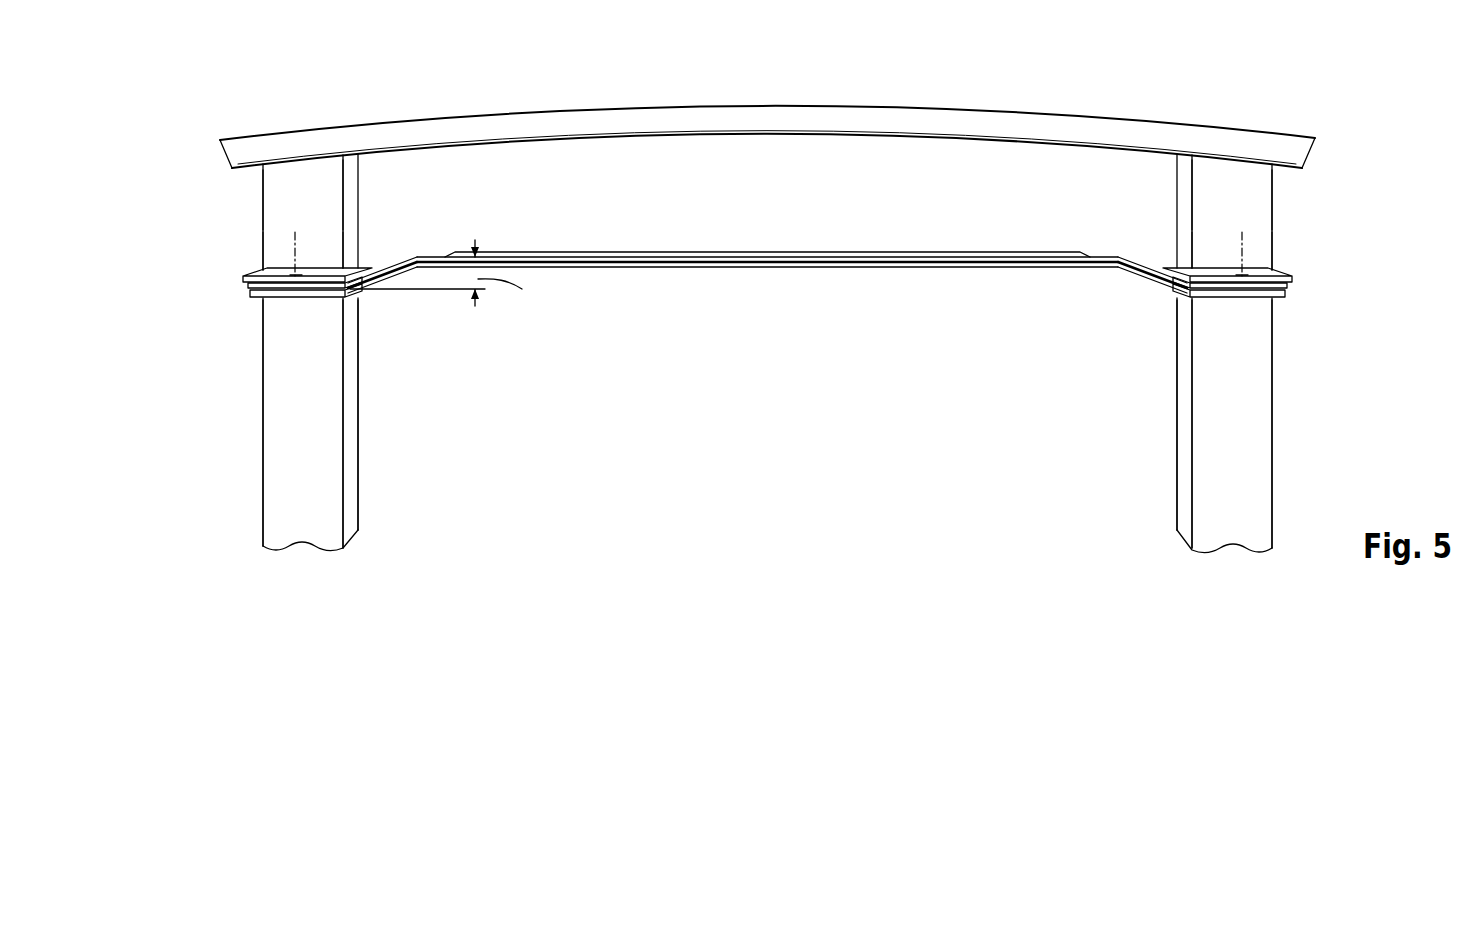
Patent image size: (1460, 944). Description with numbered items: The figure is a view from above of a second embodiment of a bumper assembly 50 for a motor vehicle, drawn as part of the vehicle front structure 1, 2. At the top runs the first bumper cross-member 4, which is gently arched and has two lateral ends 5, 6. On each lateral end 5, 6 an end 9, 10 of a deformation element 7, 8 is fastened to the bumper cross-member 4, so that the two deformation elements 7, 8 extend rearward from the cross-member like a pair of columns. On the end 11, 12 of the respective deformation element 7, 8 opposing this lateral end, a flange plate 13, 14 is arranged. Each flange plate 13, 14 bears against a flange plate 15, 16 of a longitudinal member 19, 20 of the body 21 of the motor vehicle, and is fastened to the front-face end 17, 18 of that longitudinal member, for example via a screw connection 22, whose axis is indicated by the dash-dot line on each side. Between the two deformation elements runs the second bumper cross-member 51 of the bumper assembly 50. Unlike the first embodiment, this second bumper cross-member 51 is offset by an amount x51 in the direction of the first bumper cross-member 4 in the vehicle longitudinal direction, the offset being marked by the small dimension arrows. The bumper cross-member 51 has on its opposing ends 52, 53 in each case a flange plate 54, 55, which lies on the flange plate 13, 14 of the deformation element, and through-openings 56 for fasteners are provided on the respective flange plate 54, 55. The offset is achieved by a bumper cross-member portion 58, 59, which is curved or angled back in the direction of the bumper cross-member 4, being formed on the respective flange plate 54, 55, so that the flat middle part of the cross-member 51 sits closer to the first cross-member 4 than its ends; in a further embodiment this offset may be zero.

The body structure 1 is at (772, 98).
The roof structure 2 is at (772, 98).
The bumper cross-member 4 is at (772, 98).
The lateral end 5 is at (236, 148).
The lateral end 6 is at (1298, 148).
The deformation element 7 is at (293, 192).
The deformation element 8 is at (1238, 193).
The end of deformation element 9 is at (297, 163).
The end of deformation element 10 is at (1238, 163).
The end of deformation element 11 is at (270, 256).
The end of deformation element 12 is at (1265, 256).
The flange plate 13 is at (243, 279).
The flange plate 14 is at (1292, 279).
The flange plate 15 is at (221, 325).
The flange plate 16 is at (1314, 325).
The end 17 is at (250, 295).
The end 18 is at (1287, 295).
The longitudinal member 19 is at (270, 440).
The longitudinal member 20 is at (1265, 440).
The body 21 is at (767, 309).
The screw connection 22 is at (292, 244).
The bumper assembly 50 is at (772, 98).
The second bumper cross-member 51 is at (728, 264).
The end 52 is at (221, 306).
The end 53 is at (1314, 306).
The flange plate 54 is at (248, 286).
The flange plate 55 is at (1288, 286).
The through-opening 56 is at (296, 274).
The bumper cross-member portion 58 is at (396, 276).
The bumper cross-member portion 59 is at (1137, 278).